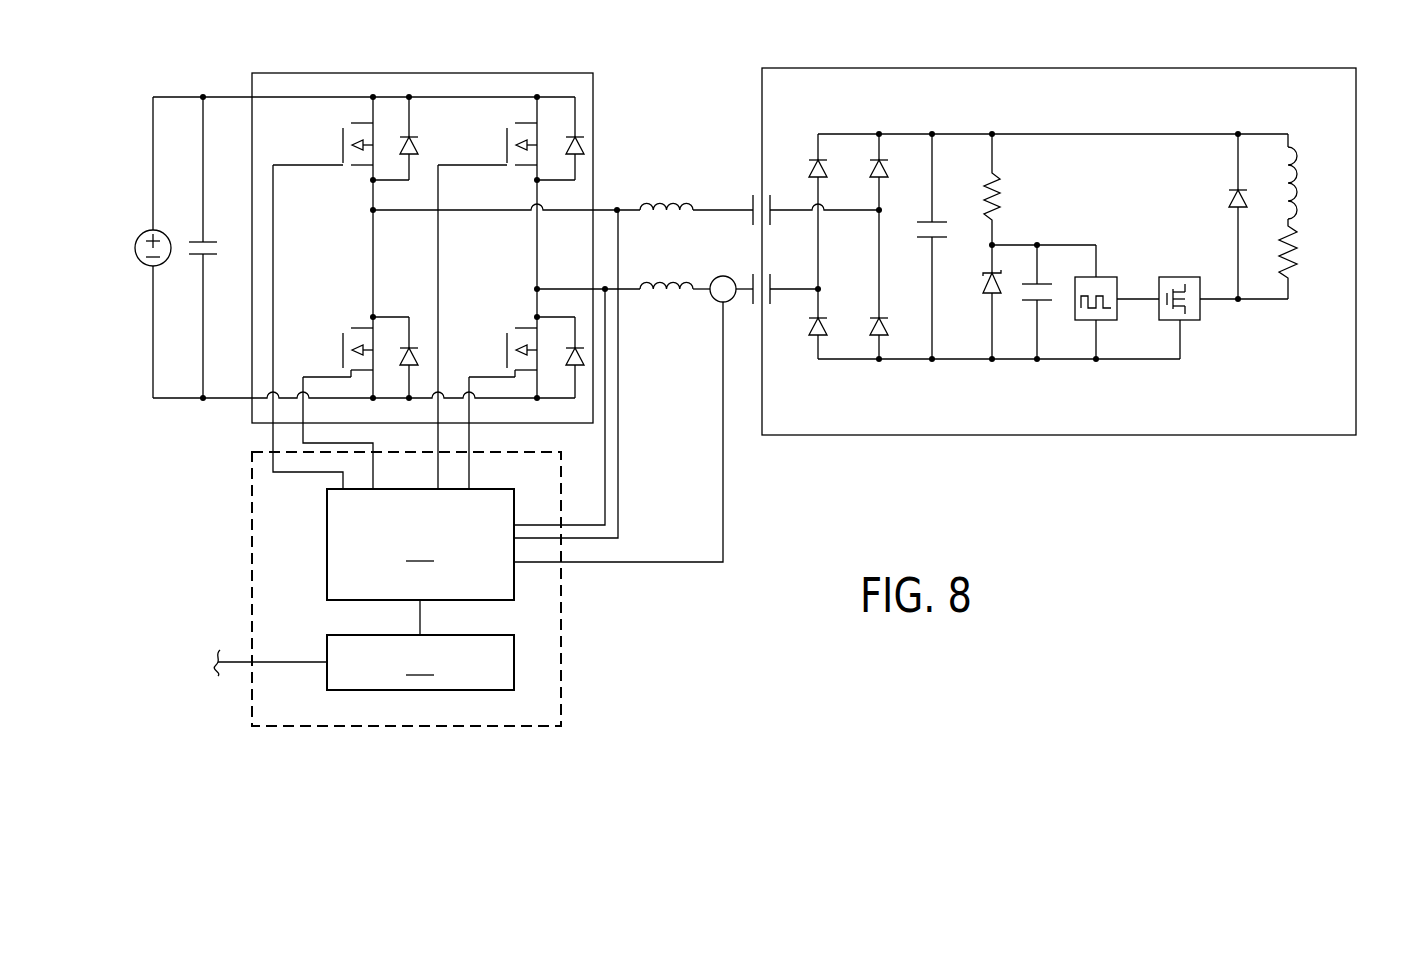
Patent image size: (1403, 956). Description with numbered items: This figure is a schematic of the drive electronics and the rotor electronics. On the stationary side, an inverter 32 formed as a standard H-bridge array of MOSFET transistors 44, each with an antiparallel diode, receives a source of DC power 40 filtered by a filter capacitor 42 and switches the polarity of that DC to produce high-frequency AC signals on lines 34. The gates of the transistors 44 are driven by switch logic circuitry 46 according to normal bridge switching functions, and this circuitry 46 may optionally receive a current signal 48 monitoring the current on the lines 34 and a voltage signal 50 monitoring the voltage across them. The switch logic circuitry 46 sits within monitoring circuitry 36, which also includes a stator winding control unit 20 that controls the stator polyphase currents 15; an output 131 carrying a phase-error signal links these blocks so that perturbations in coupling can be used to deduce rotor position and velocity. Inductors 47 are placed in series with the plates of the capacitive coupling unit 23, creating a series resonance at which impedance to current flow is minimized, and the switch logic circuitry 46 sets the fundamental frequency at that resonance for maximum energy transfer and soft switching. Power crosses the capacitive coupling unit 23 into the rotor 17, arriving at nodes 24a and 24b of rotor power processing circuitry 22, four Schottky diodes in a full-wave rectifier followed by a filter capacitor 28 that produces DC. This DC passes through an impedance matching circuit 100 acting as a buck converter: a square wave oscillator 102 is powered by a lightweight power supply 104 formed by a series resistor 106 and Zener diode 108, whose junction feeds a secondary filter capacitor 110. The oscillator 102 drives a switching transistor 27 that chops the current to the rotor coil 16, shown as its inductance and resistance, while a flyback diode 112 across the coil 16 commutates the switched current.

The stator polyphase currents 15 is at (294, 661).
The rotor coil 16 is at (1302, 175).
The rotor 17 is at (791, 68).
The stator winding control unit 20 is at (420, 662).
The rotor power processing circuitry 22 is at (879, 128).
The capacitive coupling unit 23 is at (740, 266).
The first rectifier input node 24a is at (802, 292).
The second rectifier input node 24b is at (852, 213).
The switch 27 is at (1210, 335).
The filter capacitor 28 is at (940, 220).
The inverter 32 is at (337, 73).
The lines 34 is at (639, 287).
The monitoring circuitry 36 is at (251, 520).
The source of DC power 40 is at (140, 237).
The filter capacitor 42 is at (197, 261).
The transistors 44 is at (553, 128).
The switch logic circuitry 46 is at (420, 544).
The inductors 47 is at (672, 295).
The current signal 48 is at (724, 465).
The voltage signal 50 is at (608, 474).
The impedance matching circuit 100 is at (963, 367).
The square wave oscillator 102 is at (1106, 276).
The power supply 104 is at (1025, 210).
The resistor 106 is at (998, 192).
The Zener diode 108 is at (983, 296).
The secondary filter capacitor 110 is at (1042, 282).
The flyback diode 112 is at (1229, 200).
The output 131 is at (423, 616).